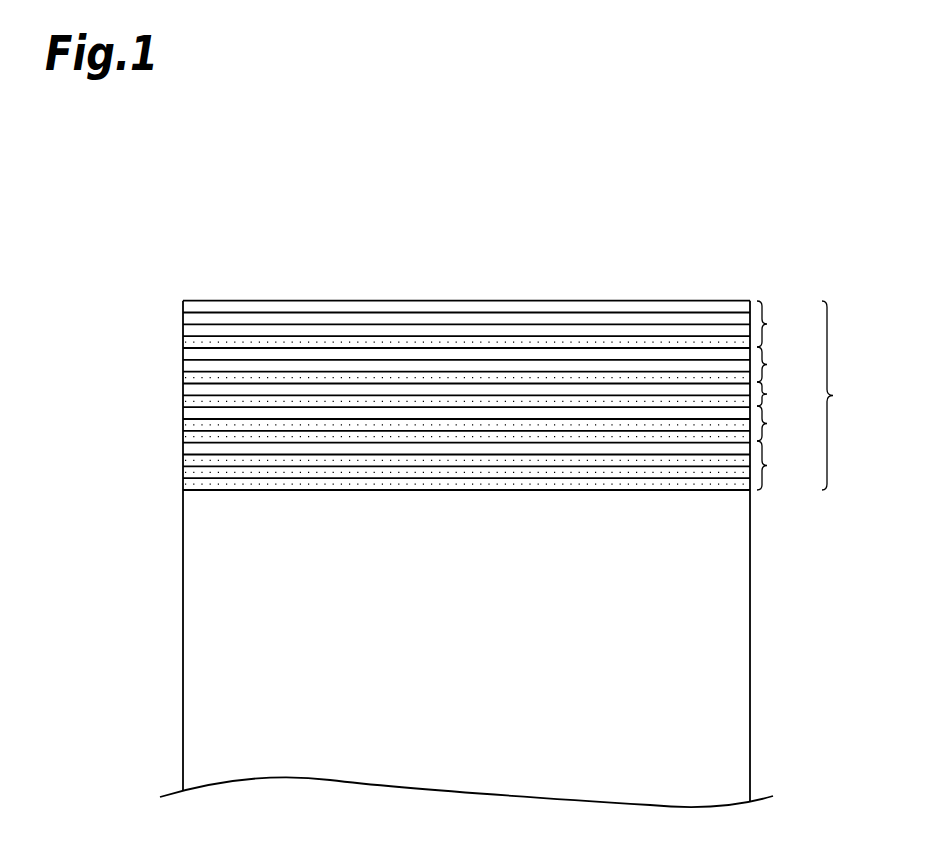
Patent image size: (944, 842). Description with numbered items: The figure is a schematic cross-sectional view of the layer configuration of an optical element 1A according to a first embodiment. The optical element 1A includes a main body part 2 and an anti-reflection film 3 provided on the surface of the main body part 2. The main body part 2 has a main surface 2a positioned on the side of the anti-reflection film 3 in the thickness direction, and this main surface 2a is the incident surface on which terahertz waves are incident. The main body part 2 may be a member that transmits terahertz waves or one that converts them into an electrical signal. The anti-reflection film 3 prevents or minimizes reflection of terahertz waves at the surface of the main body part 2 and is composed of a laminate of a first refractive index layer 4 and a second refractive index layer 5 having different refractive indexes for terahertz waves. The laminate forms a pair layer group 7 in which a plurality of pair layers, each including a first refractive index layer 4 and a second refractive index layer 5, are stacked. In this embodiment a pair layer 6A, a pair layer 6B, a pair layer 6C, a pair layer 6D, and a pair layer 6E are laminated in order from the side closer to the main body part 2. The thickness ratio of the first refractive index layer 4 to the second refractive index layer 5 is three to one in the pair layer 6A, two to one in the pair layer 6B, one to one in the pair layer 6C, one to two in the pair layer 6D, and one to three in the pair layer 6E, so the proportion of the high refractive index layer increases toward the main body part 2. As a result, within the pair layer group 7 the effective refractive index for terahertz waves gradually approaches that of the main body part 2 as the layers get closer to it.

The optical element 1A is at (240, 266).
The main body part 2 is at (202, 632).
The main surface 2a is at (235, 493).
The anti-reflection film 3 is at (170, 372).
The first refractive index layer 4 is at (350, 423).
The second refractive index layer 5 is at (404, 413).
The pair layer 6A is at (783, 465).
The pair layer 6B is at (783, 424).
The pair layer 6C is at (783, 395).
The pair layer 6D is at (784, 365).
The pair layer 6E is at (782, 324).
The pair layer group 7 is at (839, 395).